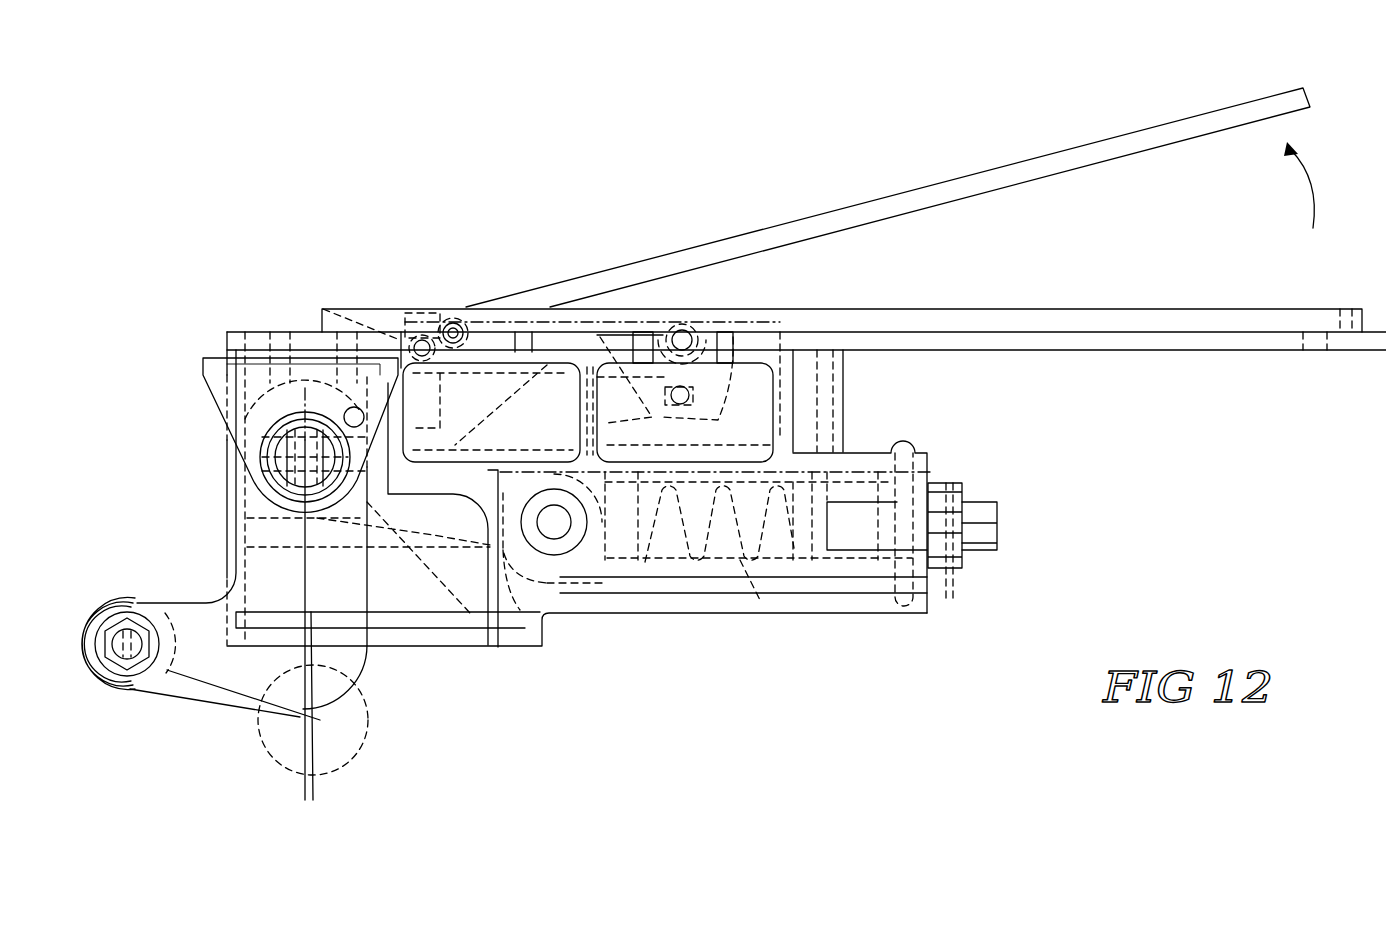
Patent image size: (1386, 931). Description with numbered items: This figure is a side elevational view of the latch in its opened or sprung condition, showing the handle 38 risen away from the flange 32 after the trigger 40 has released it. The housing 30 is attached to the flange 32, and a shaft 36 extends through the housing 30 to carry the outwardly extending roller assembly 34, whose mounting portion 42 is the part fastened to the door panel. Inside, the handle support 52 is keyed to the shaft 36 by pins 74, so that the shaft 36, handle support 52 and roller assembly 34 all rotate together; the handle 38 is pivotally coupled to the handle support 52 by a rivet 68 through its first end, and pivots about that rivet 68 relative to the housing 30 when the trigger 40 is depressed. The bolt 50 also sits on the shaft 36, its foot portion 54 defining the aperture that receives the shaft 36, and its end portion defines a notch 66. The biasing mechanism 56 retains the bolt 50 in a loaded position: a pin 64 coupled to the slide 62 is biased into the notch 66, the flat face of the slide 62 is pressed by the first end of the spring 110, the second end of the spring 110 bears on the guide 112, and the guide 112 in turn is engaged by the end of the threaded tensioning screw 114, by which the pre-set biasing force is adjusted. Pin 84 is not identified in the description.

The housing 30 is at (835, 393).
The flange 32 is at (1343, 353).
The roller assembly 34 is at (151, 715).
The shaft 36 is at (287, 455).
The handle 38 is at (1082, 143).
The trigger 40 is at (695, 309).
The mounting portion 42 is at (203, 365).
The bolt 50 is at (440, 597).
The handle support 52 is at (500, 353).
The foot portion 54 is at (712, 388).
The biasing mechanism 56 is at (654, 588).
The slide 62 is at (593, 557).
The pin 64 is at (557, 530).
The notch 66 is at (548, 528).
The rivet 68 is at (453, 322).
The pin 74 is at (302, 473).
The pivot pin 84 is at (680, 330).
The spring 110 is at (775, 568).
The guide 112 is at (802, 568).
The threaded tensioning screw 114 is at (972, 560).